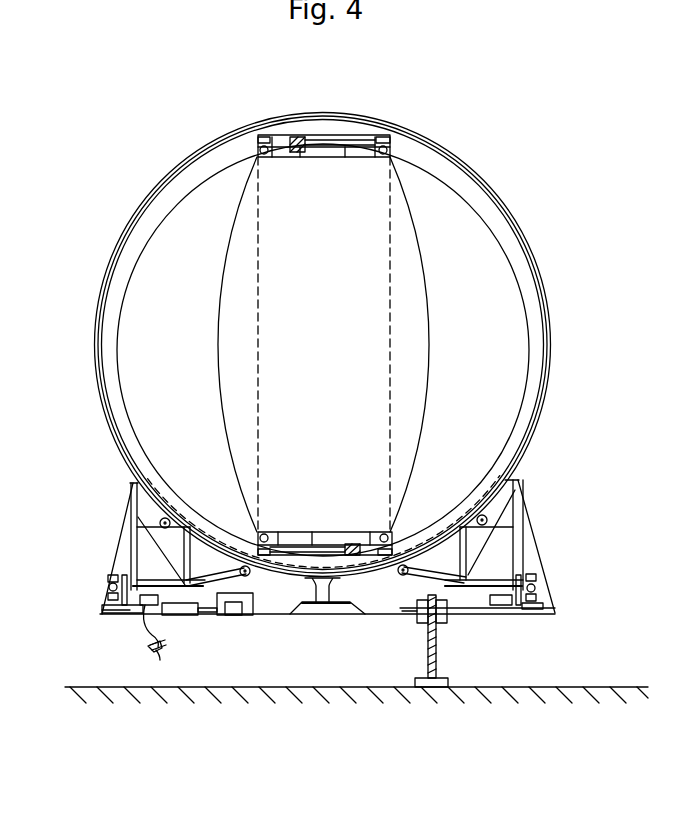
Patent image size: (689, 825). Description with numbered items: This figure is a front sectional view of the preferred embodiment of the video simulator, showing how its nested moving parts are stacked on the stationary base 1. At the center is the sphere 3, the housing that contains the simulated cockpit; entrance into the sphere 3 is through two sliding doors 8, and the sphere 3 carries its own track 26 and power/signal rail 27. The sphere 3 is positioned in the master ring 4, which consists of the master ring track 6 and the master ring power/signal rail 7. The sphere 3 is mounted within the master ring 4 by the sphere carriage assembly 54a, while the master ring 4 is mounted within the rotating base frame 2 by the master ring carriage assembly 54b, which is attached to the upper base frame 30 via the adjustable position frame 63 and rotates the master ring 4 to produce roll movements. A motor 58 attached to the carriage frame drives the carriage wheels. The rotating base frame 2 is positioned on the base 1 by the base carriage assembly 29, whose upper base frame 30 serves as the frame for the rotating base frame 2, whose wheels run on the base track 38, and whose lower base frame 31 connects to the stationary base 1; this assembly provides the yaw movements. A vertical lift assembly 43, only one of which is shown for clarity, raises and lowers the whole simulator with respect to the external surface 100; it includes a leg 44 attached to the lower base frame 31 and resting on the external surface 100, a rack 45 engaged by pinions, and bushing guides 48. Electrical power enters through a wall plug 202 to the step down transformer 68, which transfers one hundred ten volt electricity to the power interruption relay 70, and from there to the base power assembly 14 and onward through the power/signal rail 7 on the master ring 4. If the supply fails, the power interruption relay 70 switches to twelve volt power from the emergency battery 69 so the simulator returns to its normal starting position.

The base 1 is at (557, 610).
The rotating base frame 2 is at (527, 503).
The sphere 3 is at (328, 330).
The master ring 4 is at (528, 312).
The master ring track 6 is at (97, 338).
The master ring power/signal rail 7 is at (100, 341).
The sliding doors 8 is at (218, 367).
The base power assembly 14 is at (378, 607).
The track 26 is at (257, 145).
The power/signal rail 27 is at (320, 158).
The base carriage assembly 29 is at (107, 598).
The upper base frame 30 is at (125, 548).
The lower base frame 31 is at (448, 616).
The base track 38 is at (110, 582).
The vertical lift assembly 43 is at (410, 673).
The leg 44 is at (438, 688).
The rack 45 is at (428, 600).
The bushing guides 48 is at (420, 653).
The sphere carriage assembly 54a is at (307, 158).
The master ring carriage assembly 54b is at (135, 525).
The motor 58 is at (143, 613).
The adjustable position frame 63 is at (170, 540).
The step down transformer 68 is at (188, 607).
The emergency battery 69 is at (262, 616).
The power interruption relay 70 is at (232, 617).
The external surface 100 is at (568, 687).
The wall plug 202 is at (171, 647).